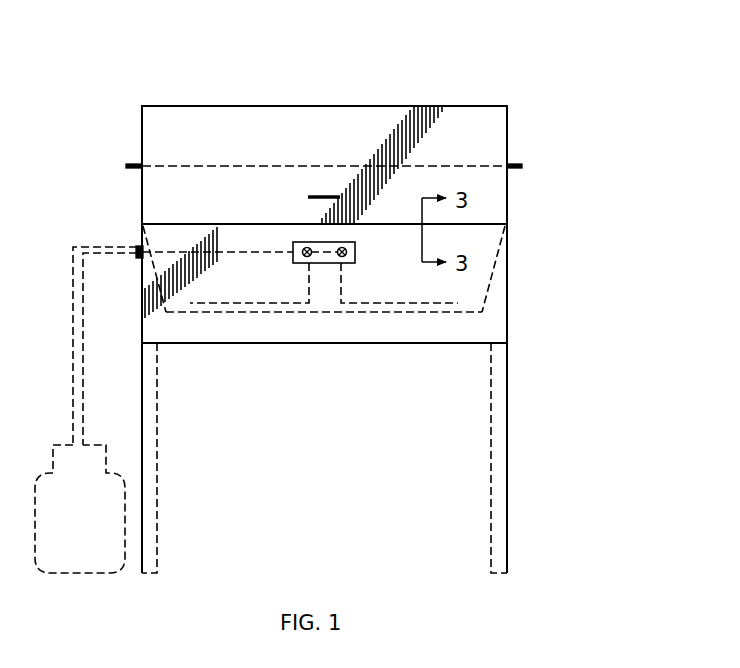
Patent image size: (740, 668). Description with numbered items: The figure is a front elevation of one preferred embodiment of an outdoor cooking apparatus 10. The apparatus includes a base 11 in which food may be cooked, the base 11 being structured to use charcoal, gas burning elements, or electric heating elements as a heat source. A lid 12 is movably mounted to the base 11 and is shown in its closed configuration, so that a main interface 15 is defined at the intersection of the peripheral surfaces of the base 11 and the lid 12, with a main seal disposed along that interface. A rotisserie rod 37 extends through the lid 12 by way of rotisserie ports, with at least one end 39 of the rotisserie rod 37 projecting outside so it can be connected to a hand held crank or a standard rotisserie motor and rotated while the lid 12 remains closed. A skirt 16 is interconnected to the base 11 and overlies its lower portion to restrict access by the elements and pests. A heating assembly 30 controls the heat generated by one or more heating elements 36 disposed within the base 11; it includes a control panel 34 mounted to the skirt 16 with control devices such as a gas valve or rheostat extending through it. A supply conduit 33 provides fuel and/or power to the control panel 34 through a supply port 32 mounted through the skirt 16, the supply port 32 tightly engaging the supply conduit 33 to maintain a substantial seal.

The outdoor cooking apparatus 10 is at (475, 80).
The lid 12 is at (508, 133).
The rotisserie rod 37 is at (243, 163).
The end of rotisserie rod 39 is at (128, 165).
The base 11 is at (497, 263).
The skirt 16 is at (507, 323).
The main interface 15 is at (142, 224).
The supply port 32 is at (138, 257).
The supply conduit 33 is at (242, 252).
The heating assembly 30 is at (286, 275).
The control panel 34 is at (353, 267).
The heating element 36 is at (353, 303).